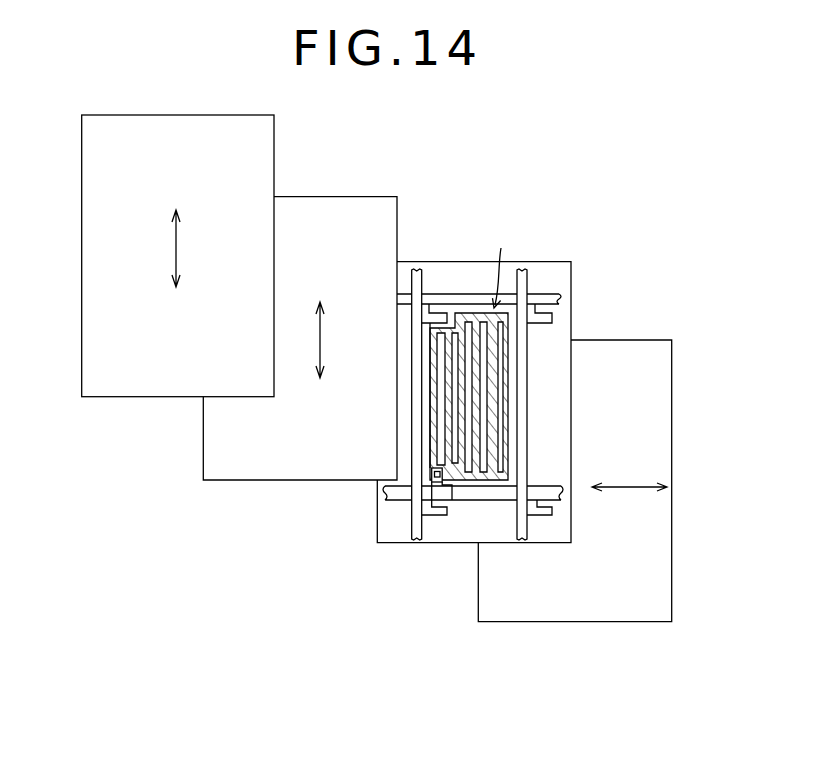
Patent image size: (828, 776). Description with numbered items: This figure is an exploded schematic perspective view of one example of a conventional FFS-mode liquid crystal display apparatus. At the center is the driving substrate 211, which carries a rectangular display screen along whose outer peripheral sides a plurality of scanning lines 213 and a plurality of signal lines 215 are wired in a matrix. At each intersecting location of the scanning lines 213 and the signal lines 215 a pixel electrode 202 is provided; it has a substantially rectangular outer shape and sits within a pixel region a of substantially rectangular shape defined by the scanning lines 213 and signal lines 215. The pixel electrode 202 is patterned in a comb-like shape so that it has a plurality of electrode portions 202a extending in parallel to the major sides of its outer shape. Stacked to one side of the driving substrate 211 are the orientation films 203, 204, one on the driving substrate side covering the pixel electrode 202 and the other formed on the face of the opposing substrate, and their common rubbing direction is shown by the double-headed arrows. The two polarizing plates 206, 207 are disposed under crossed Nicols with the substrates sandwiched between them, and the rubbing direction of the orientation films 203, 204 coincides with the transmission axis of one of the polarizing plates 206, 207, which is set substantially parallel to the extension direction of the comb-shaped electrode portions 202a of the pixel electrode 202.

The polarizing plate 207 is at (107, 397).
The orientation film 203 is at (300, 370).
The orientation film 204 is at (242, 480).
The polarizing plate 206 is at (665, 339).
The driving substrate 211 is at (560, 262).
The scanning line 213 is at (562, 300).
The signal line 215 is at (418, 545).
The pixel electrode 202 is at (539, 361).
The electrode portion 202a is at (505, 367).
The pixel region a is at (510, 246).